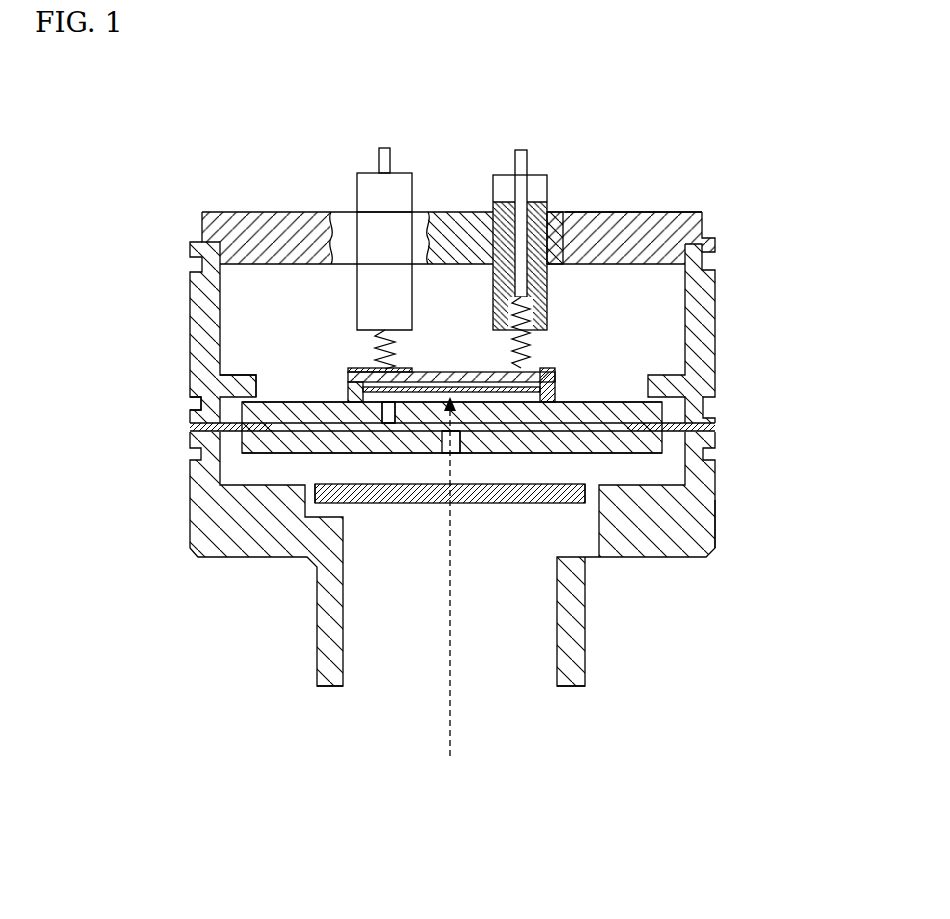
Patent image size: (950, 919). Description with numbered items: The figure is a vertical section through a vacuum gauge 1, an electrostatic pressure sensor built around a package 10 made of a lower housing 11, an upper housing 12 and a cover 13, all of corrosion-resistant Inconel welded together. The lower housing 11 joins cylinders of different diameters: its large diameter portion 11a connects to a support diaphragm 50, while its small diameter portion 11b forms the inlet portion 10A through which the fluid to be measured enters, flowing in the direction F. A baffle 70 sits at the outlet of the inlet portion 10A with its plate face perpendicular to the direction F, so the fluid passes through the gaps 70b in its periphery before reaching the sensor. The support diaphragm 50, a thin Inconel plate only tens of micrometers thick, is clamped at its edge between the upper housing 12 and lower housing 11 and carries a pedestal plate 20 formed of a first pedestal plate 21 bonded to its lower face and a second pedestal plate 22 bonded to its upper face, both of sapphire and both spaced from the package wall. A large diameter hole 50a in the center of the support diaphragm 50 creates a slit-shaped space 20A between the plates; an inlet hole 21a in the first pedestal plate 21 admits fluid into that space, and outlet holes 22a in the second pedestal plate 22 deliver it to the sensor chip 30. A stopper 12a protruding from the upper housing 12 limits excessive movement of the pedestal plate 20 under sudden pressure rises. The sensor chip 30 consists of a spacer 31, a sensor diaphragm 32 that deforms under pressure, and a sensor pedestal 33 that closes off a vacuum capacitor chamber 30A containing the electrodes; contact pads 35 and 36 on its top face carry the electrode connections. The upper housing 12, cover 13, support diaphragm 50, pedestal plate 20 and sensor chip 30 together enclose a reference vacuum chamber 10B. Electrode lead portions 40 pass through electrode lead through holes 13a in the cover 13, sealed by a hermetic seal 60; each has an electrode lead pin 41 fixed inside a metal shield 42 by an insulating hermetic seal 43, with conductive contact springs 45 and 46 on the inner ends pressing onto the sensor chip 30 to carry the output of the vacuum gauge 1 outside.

The vacuum gauge 1 is at (676, 196).
The package 10 is at (806, 257).
The inlet portion 10A is at (522, 663).
The reference vacuum chamber 10B is at (253, 283).
The lower housing 11 is at (718, 470).
The large diameter portion 11a is at (718, 528).
The small diameter portion 11b is at (583, 672).
The upper housing 12 is at (716, 335).
The stopper 12a is at (252, 396).
The cover 13 is at (705, 226).
The electrode lead through hole 13a is at (573, 212).
The pedestal plate 20 is at (97, 505).
The slit-shaped space 20A is at (398, 454).
The first pedestal plate 21 is at (280, 430).
The inlet hole 21a is at (478, 456).
The second pedestal plate 22 is at (262, 408).
The outlet hole 22a is at (445, 400).
The sensor chip 30 is at (574, 378).
The vacuum capacitor chamber 30A is at (500, 445).
The spacer 31 is at (362, 390).
The sensor diaphragm 32 is at (386, 414).
The sensor pedestal 33 is at (350, 378).
The contact pad 35 is at (355, 369).
The contact pad 36 is at (556, 368).
The electrode lead portion 40 is at (337, 183).
The electrode lead pin 41 is at (384, 150).
The metal shield 42 is at (552, 200).
The hermetic seal 43 is at (495, 208).
The contact spring 45 is at (380, 335).
The contact spring 46 is at (512, 325).
The support diaphragm 50 is at (200, 426).
The large diameter hole 50a is at (196, 403).
The hermetic seal 60 is at (482, 252).
The baffle 70 is at (412, 505).
The gap 70b is at (318, 500).
The direction F is at (451, 596).